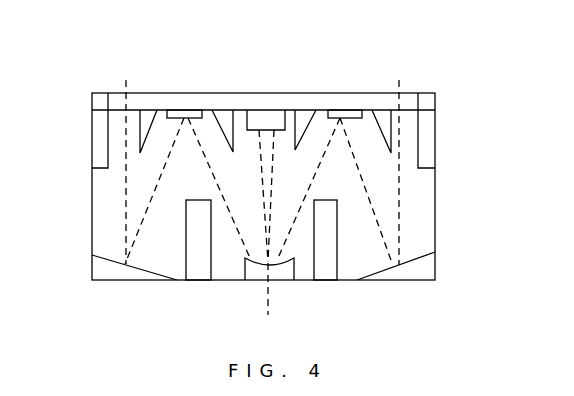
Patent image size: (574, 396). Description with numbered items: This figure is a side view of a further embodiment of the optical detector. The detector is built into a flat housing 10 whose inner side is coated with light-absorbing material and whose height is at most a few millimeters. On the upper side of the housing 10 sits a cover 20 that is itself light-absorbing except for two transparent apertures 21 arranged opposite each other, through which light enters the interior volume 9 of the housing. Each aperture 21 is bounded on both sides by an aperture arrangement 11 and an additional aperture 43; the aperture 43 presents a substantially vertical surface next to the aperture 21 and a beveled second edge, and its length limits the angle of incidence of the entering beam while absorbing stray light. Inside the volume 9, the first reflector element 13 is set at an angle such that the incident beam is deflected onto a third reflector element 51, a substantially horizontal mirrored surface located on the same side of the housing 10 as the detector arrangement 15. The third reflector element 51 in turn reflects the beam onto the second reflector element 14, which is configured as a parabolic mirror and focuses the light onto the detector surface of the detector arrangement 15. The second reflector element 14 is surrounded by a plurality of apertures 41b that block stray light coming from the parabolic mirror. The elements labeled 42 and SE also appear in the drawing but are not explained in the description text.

The housing 10 is at (435, 198).
The cover 20 is at (320, 93).
The aperture arrangement 11 is at (92, 148).
The aperture 21 is at (122, 91).
The additional aperture 43 is at (152, 132).
The third reflector element 51 is at (184, 108).
The volume 9 is at (154, 192).
The light shielding wall 42 is at (230, 110).
The detector arrangement 15 is at (254, 131).
The second reflector element 14 is at (281, 283).
The sensing axis SE is at (266, 302).
The aperture 41b is at (198, 283).
The first reflector element 13 is at (103, 283).